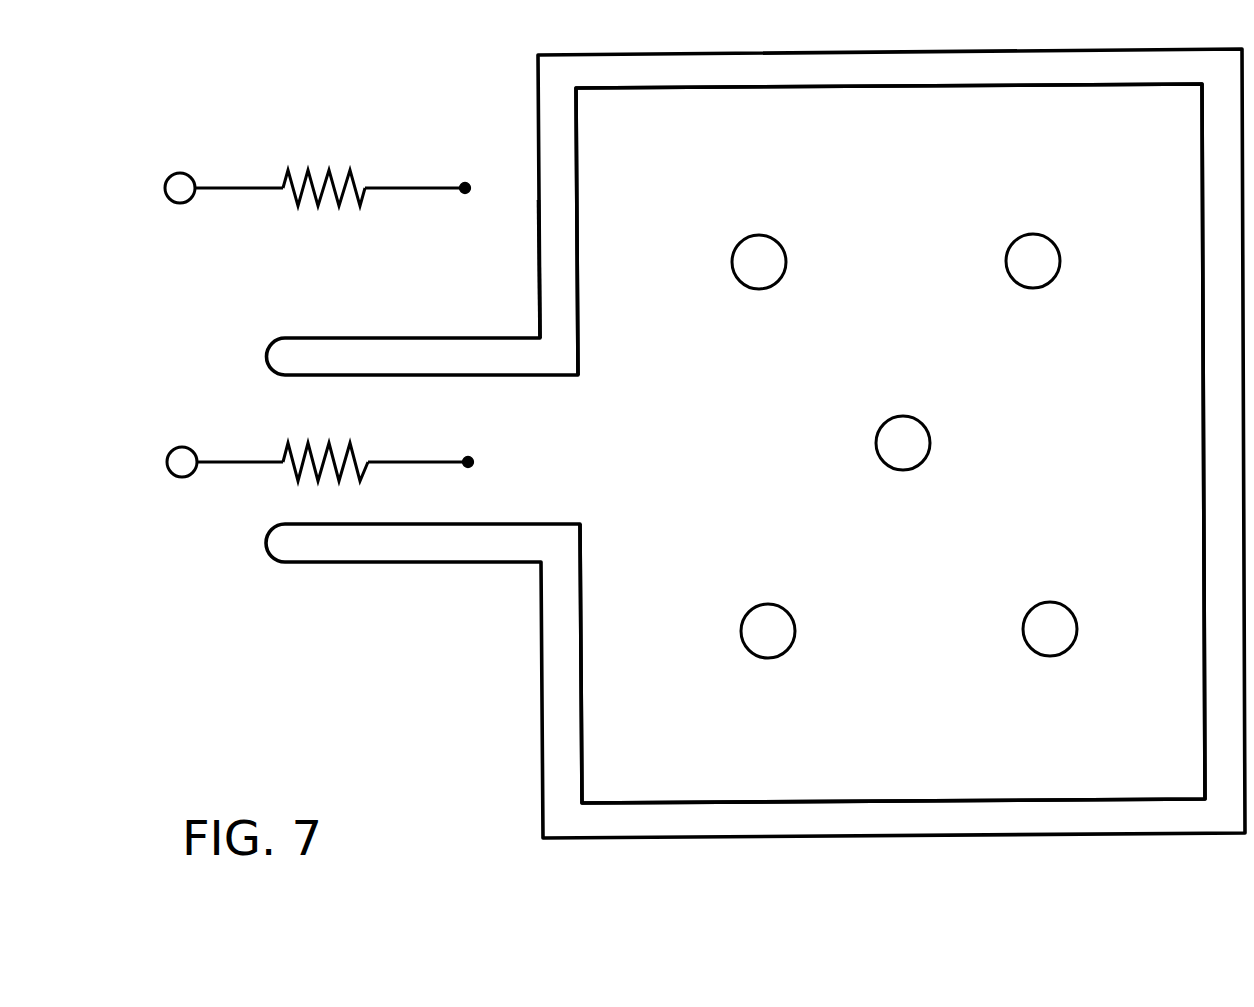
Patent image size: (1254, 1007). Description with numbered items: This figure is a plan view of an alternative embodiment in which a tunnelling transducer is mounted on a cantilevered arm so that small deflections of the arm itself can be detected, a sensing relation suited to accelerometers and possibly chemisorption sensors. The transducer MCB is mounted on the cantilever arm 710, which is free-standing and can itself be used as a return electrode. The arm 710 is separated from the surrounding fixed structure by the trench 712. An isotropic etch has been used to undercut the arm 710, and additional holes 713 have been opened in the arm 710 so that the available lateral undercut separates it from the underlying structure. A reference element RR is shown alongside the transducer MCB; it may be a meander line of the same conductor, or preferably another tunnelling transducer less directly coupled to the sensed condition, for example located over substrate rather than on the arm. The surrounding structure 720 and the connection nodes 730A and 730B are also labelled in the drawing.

The cantilever arm 710 is at (715, 446).
The trench 712 is at (550, 291).
The holes 713 is at (1038, 627).
The outer guard electrode 720 is at (500, 134).
The connection node 730A is at (475, 462).
The connection node 730B is at (466, 194).
The reference element RR is at (265, 209).
The tunnelling transducer MCB is at (267, 443).